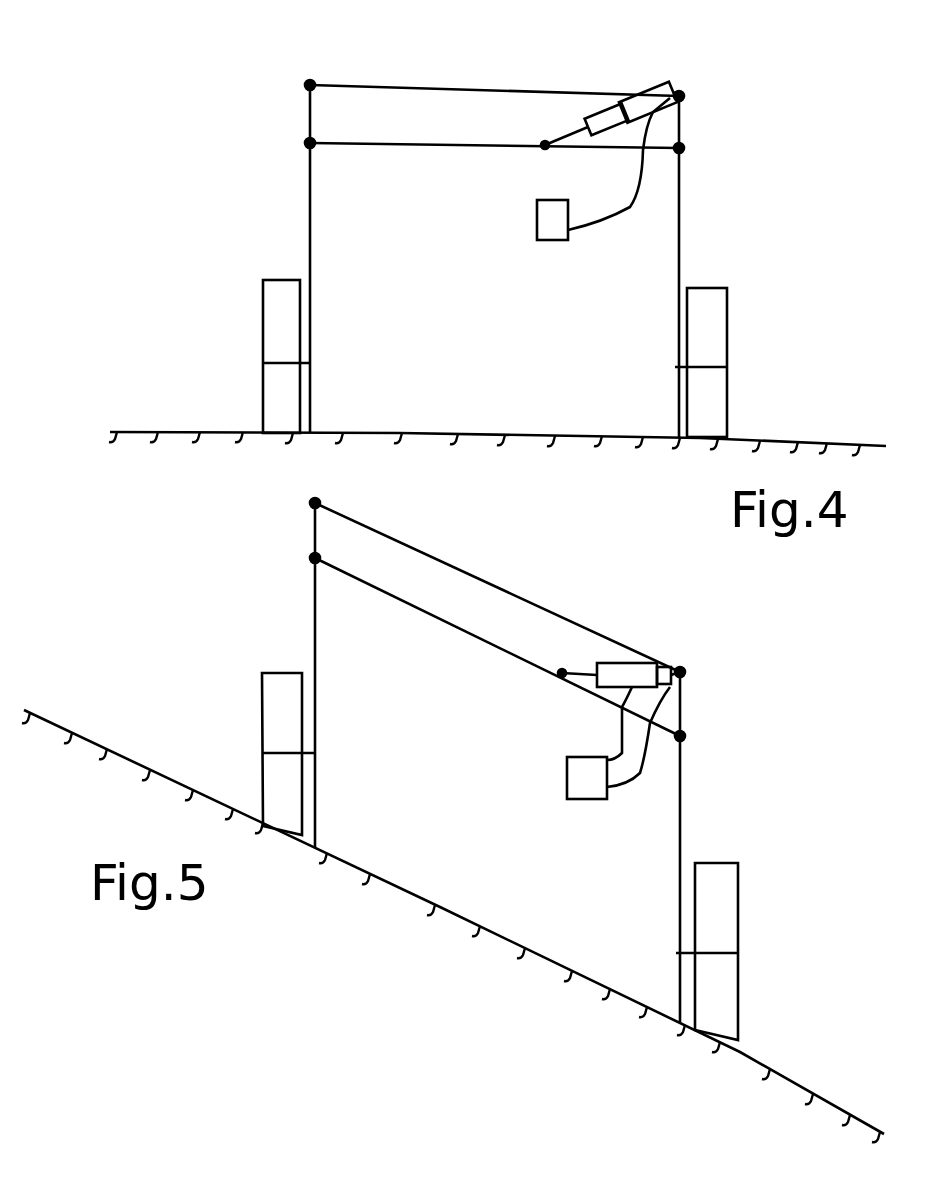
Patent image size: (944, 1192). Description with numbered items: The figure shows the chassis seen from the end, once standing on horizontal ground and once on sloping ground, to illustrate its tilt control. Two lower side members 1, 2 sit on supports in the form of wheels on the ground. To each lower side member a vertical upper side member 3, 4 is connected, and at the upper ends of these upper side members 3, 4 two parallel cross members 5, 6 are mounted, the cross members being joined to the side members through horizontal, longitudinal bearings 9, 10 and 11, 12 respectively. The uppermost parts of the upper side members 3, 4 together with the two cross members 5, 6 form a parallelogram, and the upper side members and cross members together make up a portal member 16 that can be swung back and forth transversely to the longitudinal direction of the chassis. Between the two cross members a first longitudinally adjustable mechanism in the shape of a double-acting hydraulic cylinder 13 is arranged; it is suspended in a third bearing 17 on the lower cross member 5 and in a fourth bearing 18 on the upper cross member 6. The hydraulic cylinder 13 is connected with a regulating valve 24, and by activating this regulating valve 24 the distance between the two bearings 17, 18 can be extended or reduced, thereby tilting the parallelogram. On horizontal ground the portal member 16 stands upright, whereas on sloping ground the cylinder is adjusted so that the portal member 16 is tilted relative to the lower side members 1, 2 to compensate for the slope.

In FIG. 4, the lower side member 1 is at (307, 362).
In FIG. 5, the lower side member 1 is at (316, 750).
In FIG. 4, the lower side member 2 is at (674, 366).
In FIG. 5, the lower side member 2 is at (675, 948).
In FIG. 4, the upper side member 3 is at (308, 237).
In FIG. 5, the upper side member 3 is at (315, 612).
In FIG. 4, the upper side member 4 is at (679, 253).
In FIG. 5, the upper side member 4 is at (681, 823).
In FIG. 4, the lower cross member 5 is at (373, 145).
In FIG. 5, the lower cross member 5 is at (372, 588).
In FIG. 4, the upper cross member 6 is at (420, 88).
In FIG. 5, the upper cross member 6 is at (443, 560).
In FIG. 4, the horizontal longitudinal bearing 9 is at (298, 85).
In FIG. 5, the horizontal longitudinal bearing 9 is at (310, 500).
In FIG. 4, the horizontal longitudinal bearing 10 is at (304, 143).
In FIG. 5, the horizontal longitudinal bearing 10 is at (310, 555).
In FIG. 4, the horizontal longitudinal bearing 11 is at (685, 97).
In FIG. 5, the horizontal longitudinal bearing 11 is at (684, 673).
In FIG. 4, the horizontal longitudinal bearing 12 is at (683, 148).
In FIG. 5, the horizontal longitudinal bearing 12 is at (684, 738).
In FIG. 4, the double-acting hydraulic cylinder 13 is at (570, 207).
In FIG. 5, the double-acting hydraulic cylinder 13 is at (622, 663).
In FIG. 4, the portal member 16 is at (230, 191).
In FIG. 5, the portal member 16 is at (222, 578).
In FIG. 4, the third bearing 17 is at (545, 145).
In FIG. 5, the third bearing 17 is at (562, 675).
In FIG. 4, the fourth bearing 18 is at (671, 93).
In FIG. 5, the fourth bearing 18 is at (674, 667).
In FIG. 4, the regulating valve 24 is at (537, 228).
In FIG. 5, the regulating valve 24 is at (567, 785).